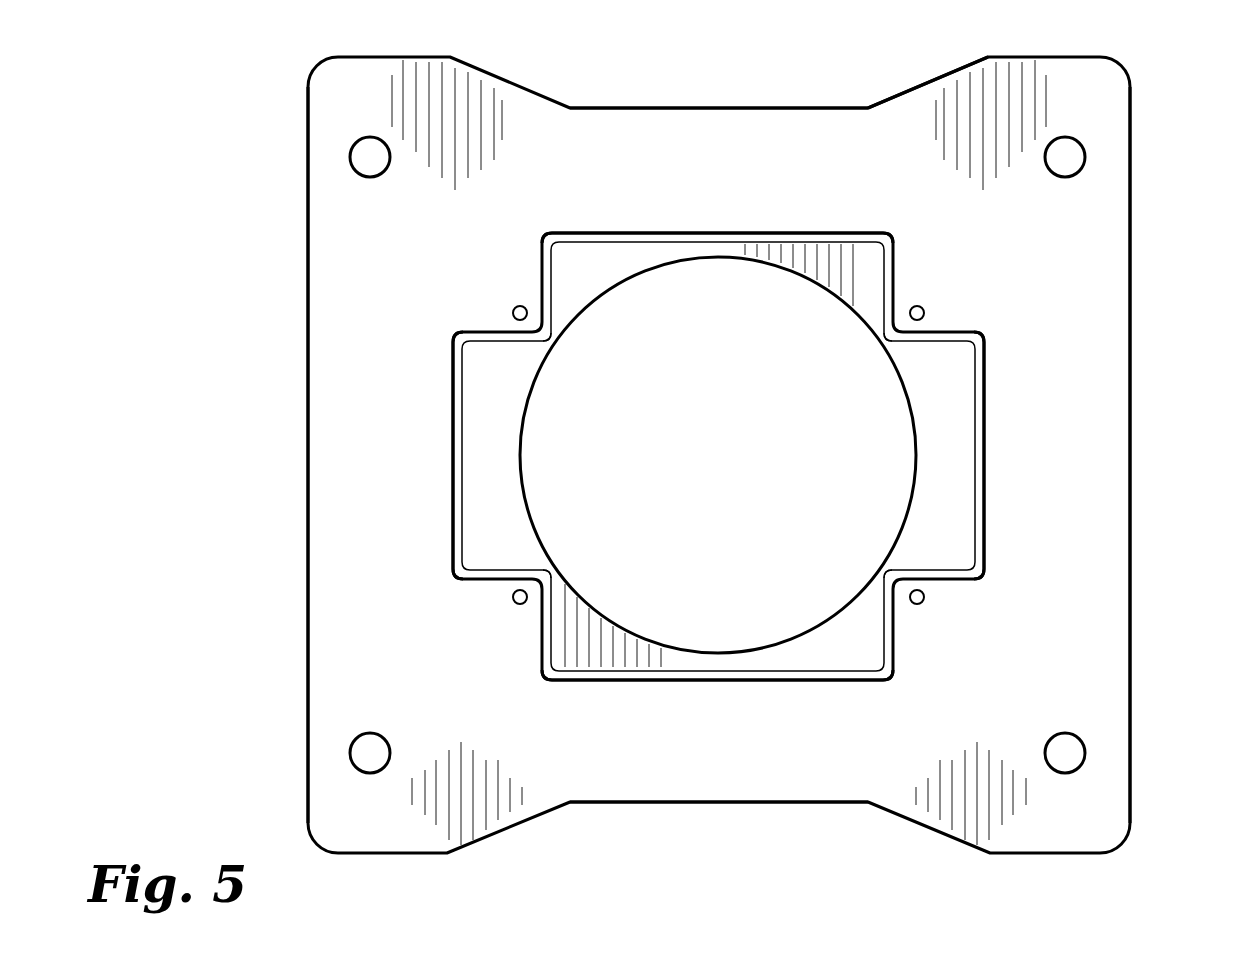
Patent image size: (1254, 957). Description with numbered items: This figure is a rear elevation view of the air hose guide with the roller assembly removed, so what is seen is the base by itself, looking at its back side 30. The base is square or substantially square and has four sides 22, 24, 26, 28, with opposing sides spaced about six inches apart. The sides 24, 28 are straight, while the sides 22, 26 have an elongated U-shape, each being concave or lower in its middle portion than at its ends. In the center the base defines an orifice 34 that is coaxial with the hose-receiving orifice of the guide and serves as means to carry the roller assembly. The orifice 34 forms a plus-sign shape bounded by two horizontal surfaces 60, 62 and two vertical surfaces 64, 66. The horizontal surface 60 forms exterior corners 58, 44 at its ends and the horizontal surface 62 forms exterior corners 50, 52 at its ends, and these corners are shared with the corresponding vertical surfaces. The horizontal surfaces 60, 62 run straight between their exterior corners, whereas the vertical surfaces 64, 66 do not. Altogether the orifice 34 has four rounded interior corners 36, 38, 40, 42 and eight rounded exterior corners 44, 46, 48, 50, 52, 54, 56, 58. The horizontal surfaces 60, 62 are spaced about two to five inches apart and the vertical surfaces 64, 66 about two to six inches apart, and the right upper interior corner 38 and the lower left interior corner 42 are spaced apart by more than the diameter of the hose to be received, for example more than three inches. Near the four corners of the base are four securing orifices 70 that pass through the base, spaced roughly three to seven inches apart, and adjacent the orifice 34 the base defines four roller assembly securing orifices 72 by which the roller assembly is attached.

The side 22 is at (748, 106).
The side 24 is at (308, 266).
The side 26 is at (720, 804).
The side 28 is at (1130, 498).
The back side 30 is at (915, 125).
The orifice 34 is at (798, 640).
The interior corner 36 is at (560, 333).
The right upper interior corner 38 is at (876, 330).
The interior corner 40 is at (895, 580).
The lower left interior corner 42 is at (553, 585).
The exterior corner 44 is at (893, 240).
The exterior corner 46 is at (978, 340).
The exterior corner 48 is at (978, 572).
The exterior corner 50 is at (893, 674).
The exterior corner 52 is at (548, 674).
The exterior corner 54 is at (463, 578).
The exterior corner 56 is at (465, 336).
The exterior corner 58 is at (553, 237).
The horizontal surface 60 is at (690, 233).
The horizontal surface 62 is at (655, 669).
The vertical surface 64 is at (455, 432).
The vertical surface 66 is at (980, 462).
The securing orifice 70 is at (370, 177).
The roller assembly securing orifice 72 is at (517, 306).